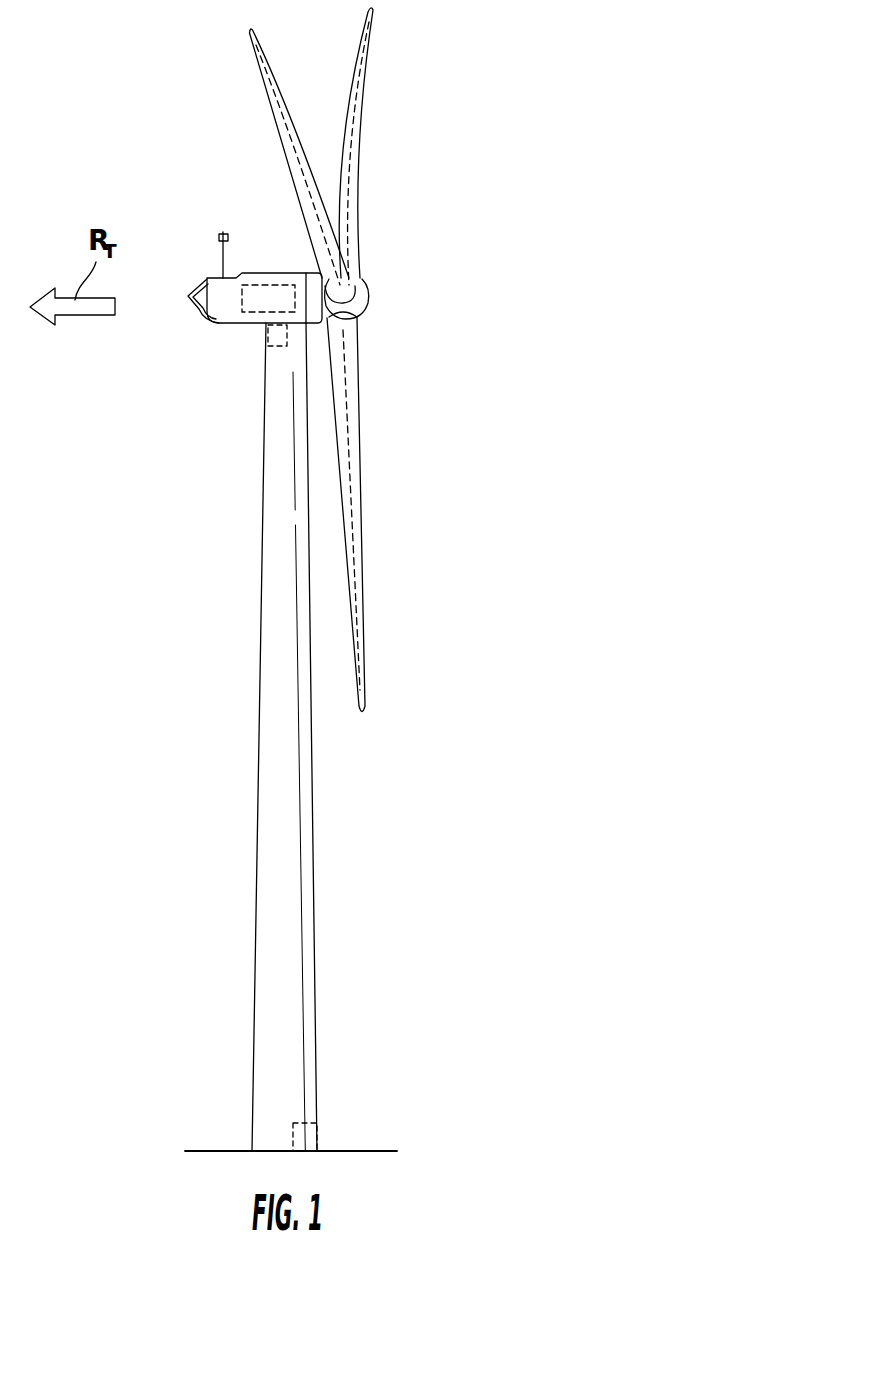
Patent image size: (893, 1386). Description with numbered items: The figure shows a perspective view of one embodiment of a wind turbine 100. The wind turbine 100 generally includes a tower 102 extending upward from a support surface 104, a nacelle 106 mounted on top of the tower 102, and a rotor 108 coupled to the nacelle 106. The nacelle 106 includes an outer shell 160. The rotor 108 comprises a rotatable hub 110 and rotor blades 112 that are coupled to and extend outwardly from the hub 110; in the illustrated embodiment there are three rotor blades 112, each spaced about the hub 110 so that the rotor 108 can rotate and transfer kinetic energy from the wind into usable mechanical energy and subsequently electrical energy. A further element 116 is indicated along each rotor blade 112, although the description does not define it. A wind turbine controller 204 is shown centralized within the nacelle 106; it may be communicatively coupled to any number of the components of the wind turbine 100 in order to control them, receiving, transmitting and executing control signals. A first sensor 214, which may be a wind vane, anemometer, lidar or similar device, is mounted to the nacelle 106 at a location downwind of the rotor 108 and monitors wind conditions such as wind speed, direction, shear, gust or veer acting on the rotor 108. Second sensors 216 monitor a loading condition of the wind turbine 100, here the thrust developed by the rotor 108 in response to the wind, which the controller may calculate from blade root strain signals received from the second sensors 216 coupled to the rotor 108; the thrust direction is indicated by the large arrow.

The wind turbine 100 is at (512, 122).
The tower 102 is at (290, 802).
The support surface 104 is at (233, 1150).
The nacelle 106 is at (222, 323).
The rotor 108 is at (418, 244).
The rotatable hub 110 is at (368, 296).
The rotor blade 112 is at (355, 125).
The pitch axis 116 is at (290, 175).
The outer shell 160 is at (300, 288).
The wind turbine controller 204 is at (260, 270).
The first sensor 214 is at (219, 265).
The second sensor 216 is at (264, 338).